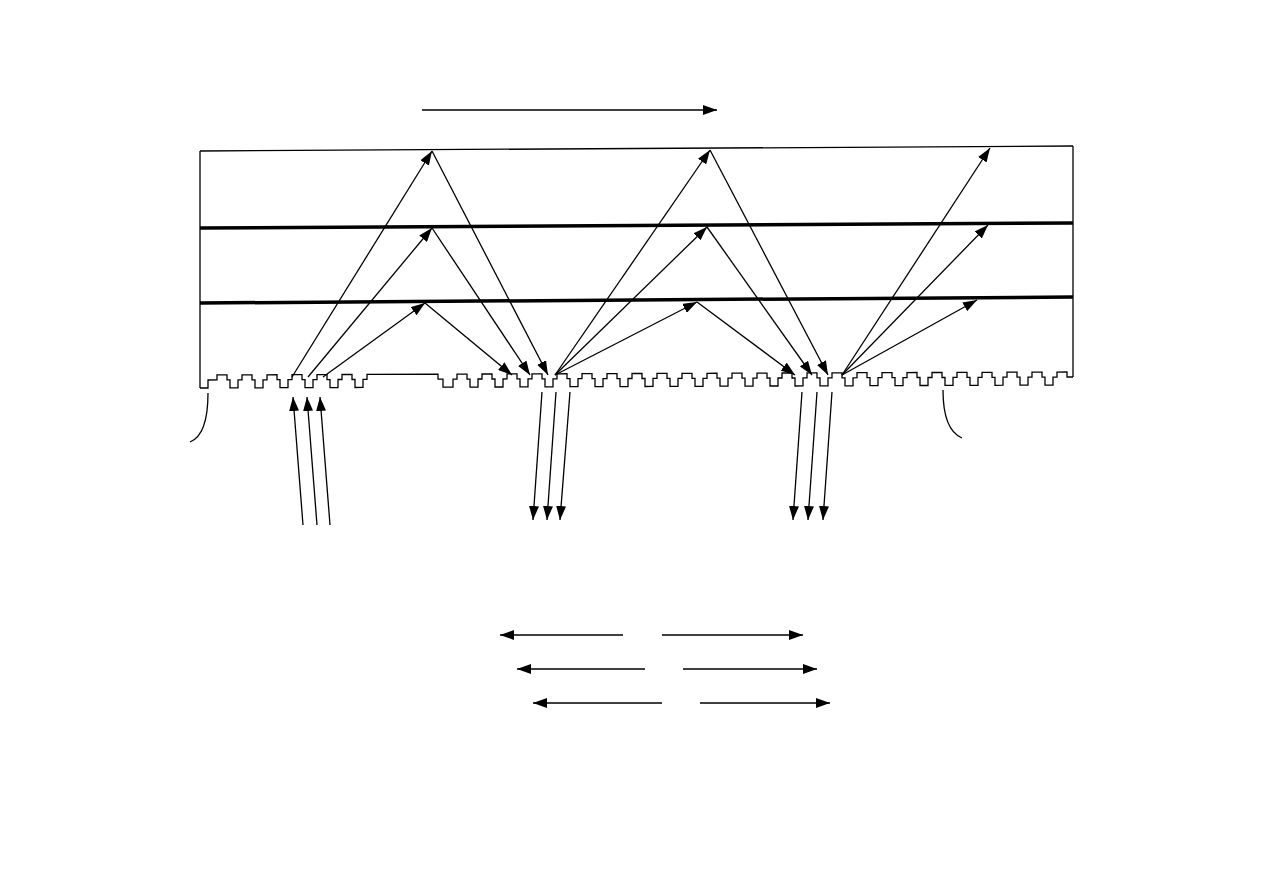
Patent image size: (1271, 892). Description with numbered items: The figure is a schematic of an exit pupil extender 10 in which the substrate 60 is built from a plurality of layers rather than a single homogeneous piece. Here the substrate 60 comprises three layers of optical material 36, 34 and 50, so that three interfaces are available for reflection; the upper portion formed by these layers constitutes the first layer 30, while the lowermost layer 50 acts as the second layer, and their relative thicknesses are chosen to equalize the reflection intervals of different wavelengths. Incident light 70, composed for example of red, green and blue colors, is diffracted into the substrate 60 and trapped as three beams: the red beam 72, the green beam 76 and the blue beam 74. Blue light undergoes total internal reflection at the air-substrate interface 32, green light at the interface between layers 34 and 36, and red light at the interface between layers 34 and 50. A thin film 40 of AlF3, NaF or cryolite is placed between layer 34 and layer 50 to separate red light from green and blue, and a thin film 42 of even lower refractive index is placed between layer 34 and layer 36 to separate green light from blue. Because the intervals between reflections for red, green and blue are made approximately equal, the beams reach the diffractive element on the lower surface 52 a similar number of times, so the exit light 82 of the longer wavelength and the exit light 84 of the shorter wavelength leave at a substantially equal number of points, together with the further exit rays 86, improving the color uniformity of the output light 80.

The exit pupil extender 10 is at (775, 98).
The first layer 30 is at (1173, 143).
The air-substrate interface 32 is at (1028, 146).
The layer of optical material 34 is at (1063, 262).
The layer of optical material 36 is at (1063, 182).
The thin film 40 is at (1075, 296).
The thin film 42 is at (1075, 222).
The second layer 50 is at (1063, 338).
The lower surface 52 is at (413, 376).
The substrate 60 is at (165, 254).
The incident light 70 is at (293, 535).
The diffracted beam 72 is at (383, 337).
The diffracted beam 74 is at (407, 192).
The diffracted beam 76 is at (392, 275).
The output light 80 is at (480, 532).
The light 82 is at (538, 445).
The light 84 is at (548, 490).
The third output ray 86 is at (565, 463).